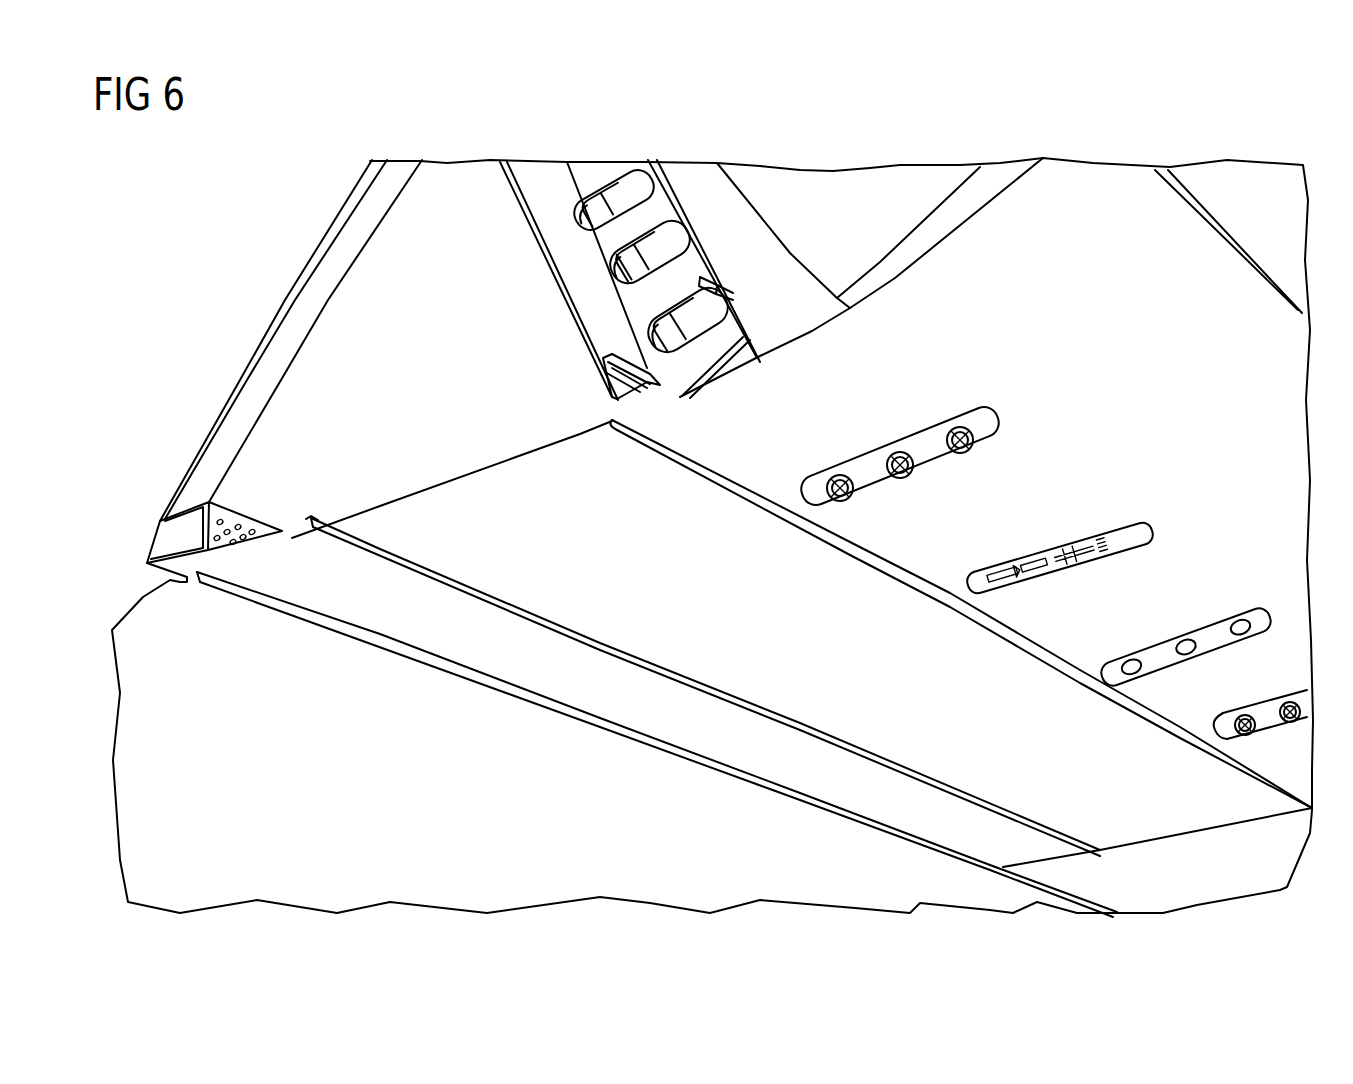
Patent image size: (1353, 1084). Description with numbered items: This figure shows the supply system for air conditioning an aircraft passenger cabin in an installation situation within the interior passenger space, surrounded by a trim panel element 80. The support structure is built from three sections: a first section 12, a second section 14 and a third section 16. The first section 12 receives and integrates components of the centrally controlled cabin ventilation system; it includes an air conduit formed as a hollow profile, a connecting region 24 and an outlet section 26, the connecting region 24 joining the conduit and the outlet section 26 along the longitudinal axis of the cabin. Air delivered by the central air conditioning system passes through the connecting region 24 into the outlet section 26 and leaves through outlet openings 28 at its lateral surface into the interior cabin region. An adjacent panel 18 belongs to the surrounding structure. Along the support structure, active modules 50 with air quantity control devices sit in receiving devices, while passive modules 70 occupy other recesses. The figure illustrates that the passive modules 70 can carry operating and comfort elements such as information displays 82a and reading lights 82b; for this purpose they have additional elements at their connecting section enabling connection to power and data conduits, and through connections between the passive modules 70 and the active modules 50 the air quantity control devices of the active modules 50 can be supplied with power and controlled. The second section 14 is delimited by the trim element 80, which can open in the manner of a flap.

The first section 12 is at (225, 327).
The second section 14 is at (466, 203).
The third section 16 is at (574, 140).
The rib panel 18 is at (808, 195).
The connecting region 24 is at (235, 435).
The outlet section 26 is at (168, 540).
The outlet openings 28 is at (240, 520).
The active module 50 is at (790, 522).
The passive module 70 is at (955, 612).
The trim panel element 80 is at (1165, 812).
The information display 82a is at (1148, 535).
The reading light 82b is at (1243, 625).